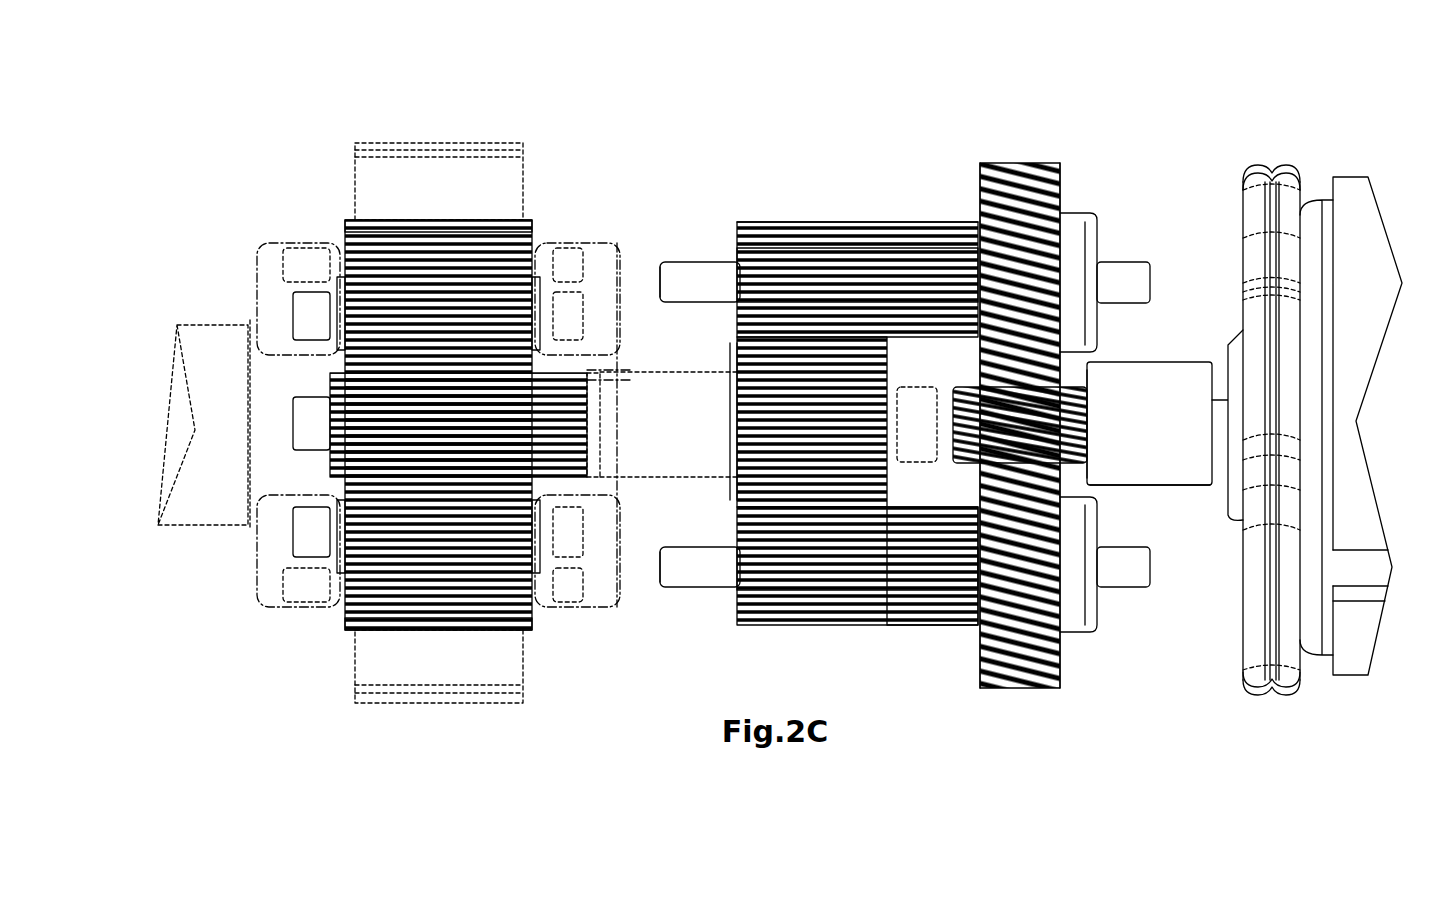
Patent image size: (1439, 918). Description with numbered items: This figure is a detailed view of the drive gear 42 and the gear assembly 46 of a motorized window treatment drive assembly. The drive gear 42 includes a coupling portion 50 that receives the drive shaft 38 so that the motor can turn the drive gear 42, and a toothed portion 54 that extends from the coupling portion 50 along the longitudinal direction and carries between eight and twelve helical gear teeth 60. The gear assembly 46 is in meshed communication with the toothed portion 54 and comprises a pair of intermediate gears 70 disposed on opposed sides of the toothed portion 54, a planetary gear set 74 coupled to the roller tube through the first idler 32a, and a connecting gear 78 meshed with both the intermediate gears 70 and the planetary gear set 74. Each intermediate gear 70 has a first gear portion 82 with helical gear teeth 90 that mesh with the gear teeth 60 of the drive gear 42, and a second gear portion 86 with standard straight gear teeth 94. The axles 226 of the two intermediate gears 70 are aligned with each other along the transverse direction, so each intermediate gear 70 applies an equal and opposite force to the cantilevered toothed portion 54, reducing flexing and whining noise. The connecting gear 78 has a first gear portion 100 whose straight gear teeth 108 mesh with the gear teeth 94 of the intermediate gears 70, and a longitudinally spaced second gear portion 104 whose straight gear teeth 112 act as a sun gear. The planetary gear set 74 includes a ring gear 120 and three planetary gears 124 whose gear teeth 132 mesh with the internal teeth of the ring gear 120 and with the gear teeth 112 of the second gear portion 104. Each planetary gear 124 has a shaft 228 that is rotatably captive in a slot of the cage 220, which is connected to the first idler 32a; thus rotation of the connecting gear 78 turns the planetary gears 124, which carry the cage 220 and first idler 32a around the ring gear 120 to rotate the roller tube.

The first idler 32a is at (207, 343).
The drive shaft 38 is at (1222, 415).
The drive gear 42 is at (1140, 462).
The gear assembly 46 is at (731, 195).
The coupling portion 50 is at (1130, 375).
The toothed portion 54 is at (946, 390).
The gear teeth 60 is at (1088, 410).
The intermediate gears 70 is at (1068, 225).
The planetary gear set 74 is at (468, 140).
The connecting gear 78 is at (662, 393).
The first gear portion 82 is at (1030, 165).
The second gear portion 86 is at (786, 225).
The helical gear teeth 90 is at (985, 168).
The gear teeth 94 is at (838, 228).
The first gear portion 100 is at (735, 510).
The second gear portion 104 is at (548, 395).
The gear teeth 108 is at (928, 602).
The gear teeth 112 is at (548, 455).
The ring gear 120 is at (385, 180).
The planetary gears 124 is at (345, 222).
The gear teeth 132 is at (530, 217).
The cage 220 is at (262, 338).
The axles 226 is at (708, 240).
The shaft 228 is at (310, 525).